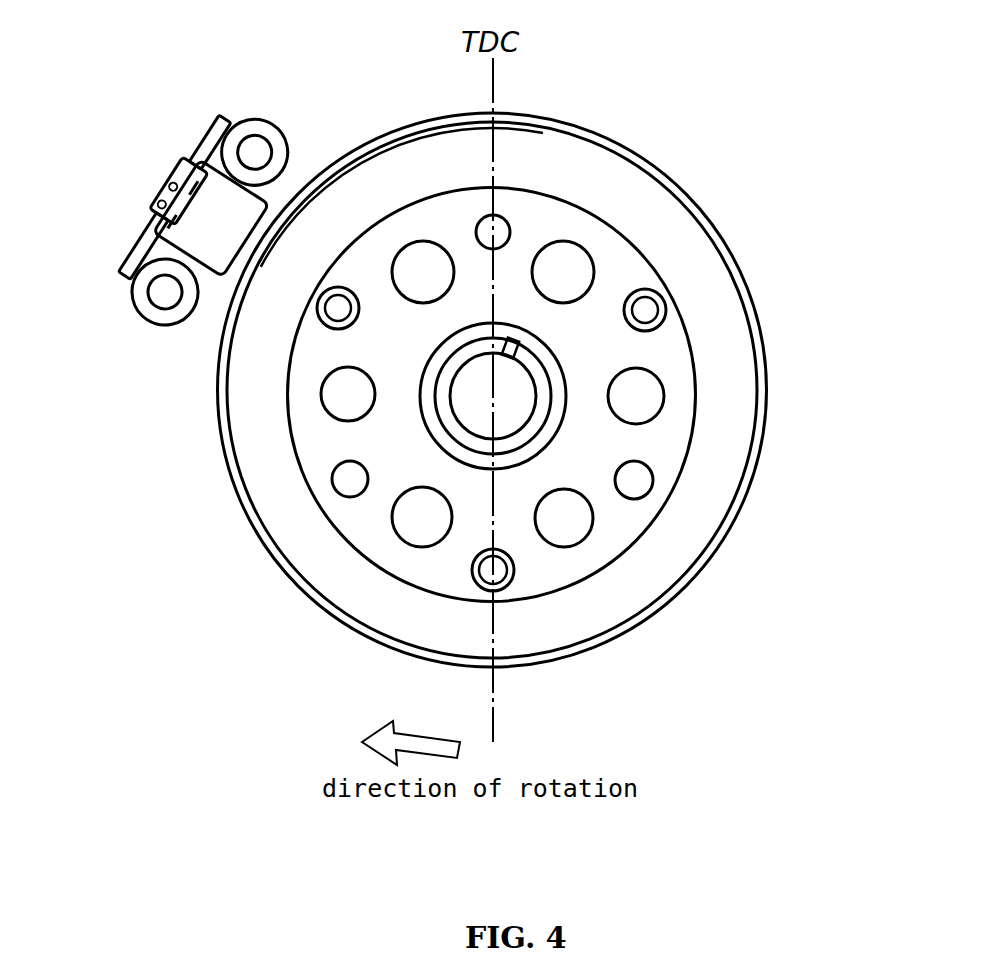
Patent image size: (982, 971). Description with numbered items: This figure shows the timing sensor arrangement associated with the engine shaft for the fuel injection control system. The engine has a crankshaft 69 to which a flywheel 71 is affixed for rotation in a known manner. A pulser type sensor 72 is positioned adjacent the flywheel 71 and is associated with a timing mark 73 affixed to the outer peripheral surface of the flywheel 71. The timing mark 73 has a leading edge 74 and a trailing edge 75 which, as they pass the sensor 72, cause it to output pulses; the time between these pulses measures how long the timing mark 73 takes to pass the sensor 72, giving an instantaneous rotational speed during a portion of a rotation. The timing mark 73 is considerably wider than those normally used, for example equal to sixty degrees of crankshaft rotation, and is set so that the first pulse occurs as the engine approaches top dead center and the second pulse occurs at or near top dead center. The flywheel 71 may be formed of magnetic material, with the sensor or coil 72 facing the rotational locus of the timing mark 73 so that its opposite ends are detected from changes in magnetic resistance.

The crankshaft 69 is at (538, 387).
The flywheel 71 is at (606, 650).
The pulser type sensor 72 is at (147, 227).
The timing mark 73 is at (414, 122).
The leading edge 74 is at (531, 115).
The trailing edge 75 is at (250, 262).